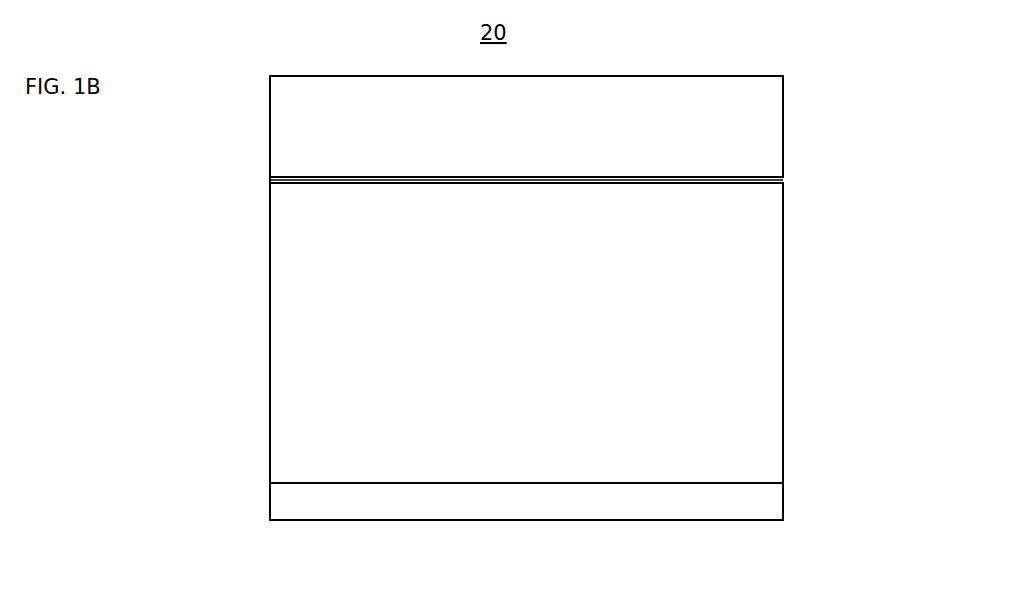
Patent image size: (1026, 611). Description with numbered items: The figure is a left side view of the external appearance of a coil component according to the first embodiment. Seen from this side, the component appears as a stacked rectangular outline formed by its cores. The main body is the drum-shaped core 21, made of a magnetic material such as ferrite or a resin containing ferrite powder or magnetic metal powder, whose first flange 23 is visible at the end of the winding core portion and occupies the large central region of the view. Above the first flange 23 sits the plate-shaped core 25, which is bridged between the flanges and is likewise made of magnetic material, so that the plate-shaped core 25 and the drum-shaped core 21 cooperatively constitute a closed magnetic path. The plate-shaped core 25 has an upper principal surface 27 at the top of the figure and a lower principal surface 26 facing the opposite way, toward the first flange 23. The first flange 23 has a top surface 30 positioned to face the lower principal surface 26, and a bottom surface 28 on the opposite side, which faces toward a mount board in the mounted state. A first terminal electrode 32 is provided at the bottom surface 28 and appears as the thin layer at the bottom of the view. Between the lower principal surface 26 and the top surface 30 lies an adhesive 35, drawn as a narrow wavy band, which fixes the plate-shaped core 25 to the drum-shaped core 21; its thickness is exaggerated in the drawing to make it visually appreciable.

The drum-shaped core 21 is at (796, 280).
The first flange 23 is at (270, 313).
The plate-shaped core 25 is at (786, 125).
The lower principal surface 26 is at (307, 184).
The upper principal surface 27 is at (349, 76).
The bottom surface 28 is at (535, 520).
The top surface 30 is at (622, 183).
The first terminal electrode 32 is at (776, 506).
The adhesive 35 is at (784, 180).